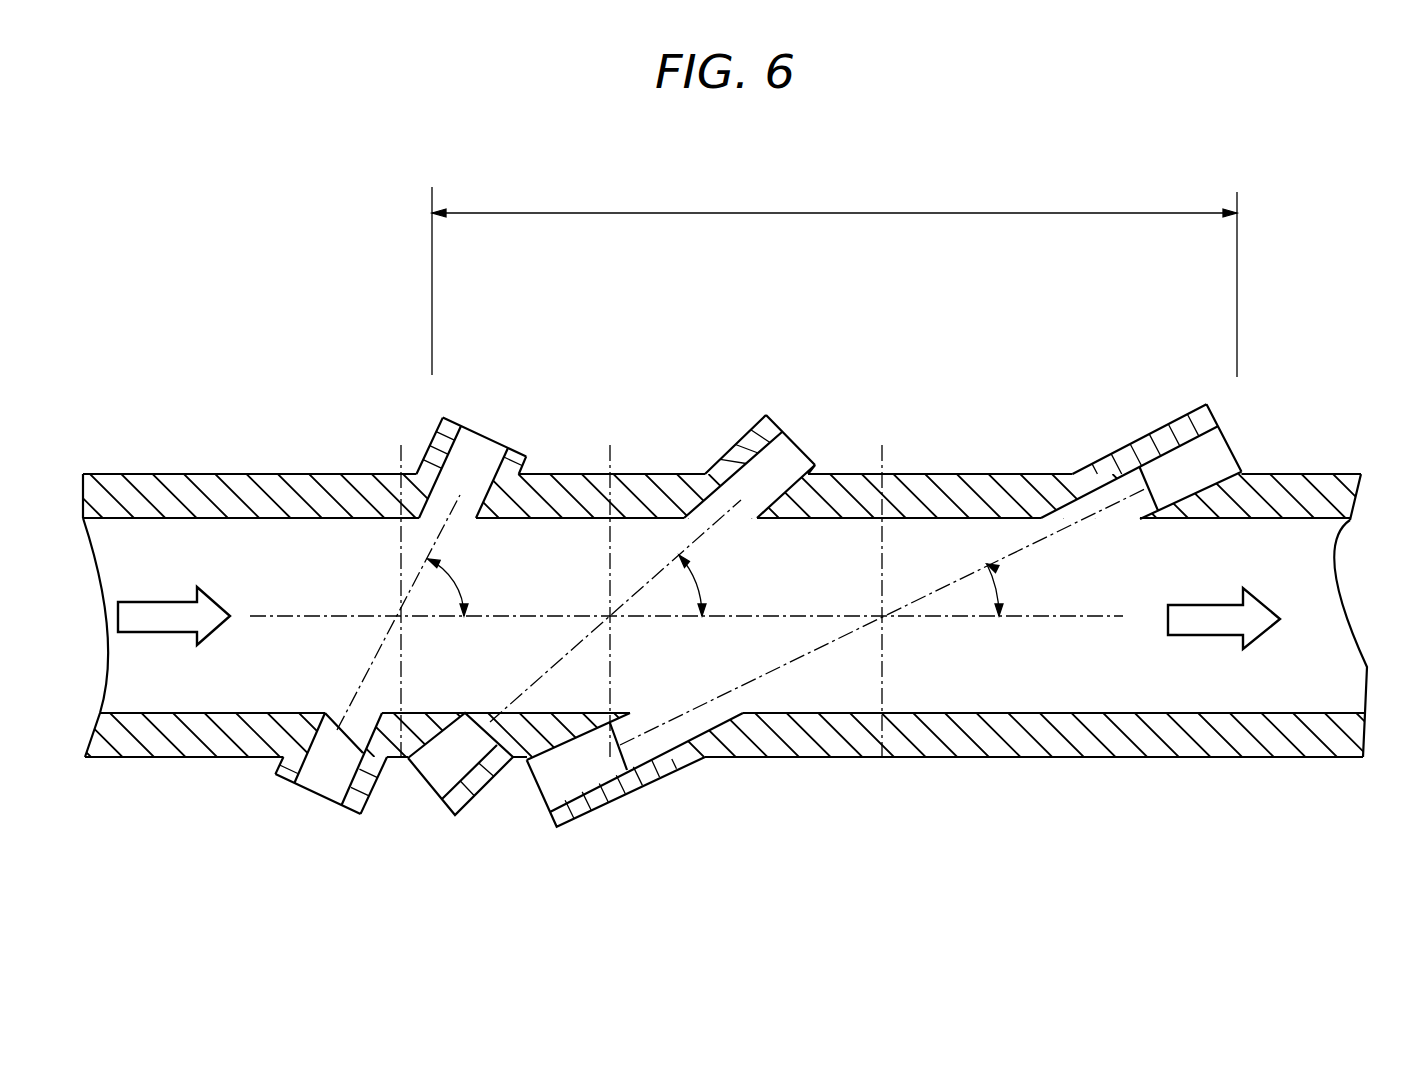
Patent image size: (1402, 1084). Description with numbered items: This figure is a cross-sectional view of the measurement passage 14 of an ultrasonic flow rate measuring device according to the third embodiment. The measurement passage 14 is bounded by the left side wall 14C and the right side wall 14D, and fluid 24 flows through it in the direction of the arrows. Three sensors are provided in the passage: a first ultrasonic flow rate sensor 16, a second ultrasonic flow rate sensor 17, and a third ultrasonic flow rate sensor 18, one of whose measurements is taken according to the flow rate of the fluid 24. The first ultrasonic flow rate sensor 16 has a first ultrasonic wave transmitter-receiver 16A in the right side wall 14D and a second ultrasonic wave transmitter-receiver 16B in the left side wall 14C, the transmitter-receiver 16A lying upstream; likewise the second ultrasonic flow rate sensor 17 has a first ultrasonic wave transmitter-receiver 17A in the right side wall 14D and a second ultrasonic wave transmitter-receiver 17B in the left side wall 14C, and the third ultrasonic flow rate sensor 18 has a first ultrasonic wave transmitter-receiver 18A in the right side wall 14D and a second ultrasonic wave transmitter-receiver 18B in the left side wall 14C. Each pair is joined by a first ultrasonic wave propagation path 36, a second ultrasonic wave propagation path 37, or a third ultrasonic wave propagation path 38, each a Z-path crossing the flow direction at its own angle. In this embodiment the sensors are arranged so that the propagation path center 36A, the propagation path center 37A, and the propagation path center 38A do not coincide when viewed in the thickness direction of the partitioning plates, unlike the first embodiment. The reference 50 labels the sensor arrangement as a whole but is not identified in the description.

The measurement passage 14 is at (723, 657).
The left side wall 14C is at (975, 477).
The right side wall 14D is at (1007, 758).
The first ultrasonic flow rate sensor 16 is at (1216, 417).
The first ultrasonic wave transmitter-receiver 16A is at (537, 787).
The second ultrasonic wave transmitter-receiver 16B is at (1223, 462).
The second ultrasonic flow rate sensor 17 is at (798, 407).
The first ultrasonic wave transmitter-receiver 17A is at (420, 786).
The second ultrasonic wave transmitter-receiver 17B is at (773, 458).
The third ultrasonic flow rate sensor 18 is at (510, 395).
The first ultrasonic wave transmitter-receiver 18A is at (318, 784).
The second ultrasonic wave transmitter-receiver 18B is at (487, 450).
The fluid 24 is at (699, 591).
The first ultrasonic wave propagation path 36 is at (1047, 535).
The propagation path center 36A is at (884, 619).
The second ultrasonic wave propagation path 37 is at (708, 527).
The propagation path center 37A is at (612, 619).
The third ultrasonic wave propagation path 38 is at (436, 540).
The propagation path center 38A is at (404, 619).
The ultrasonic flow sensor unit 50 is at (948, 410).